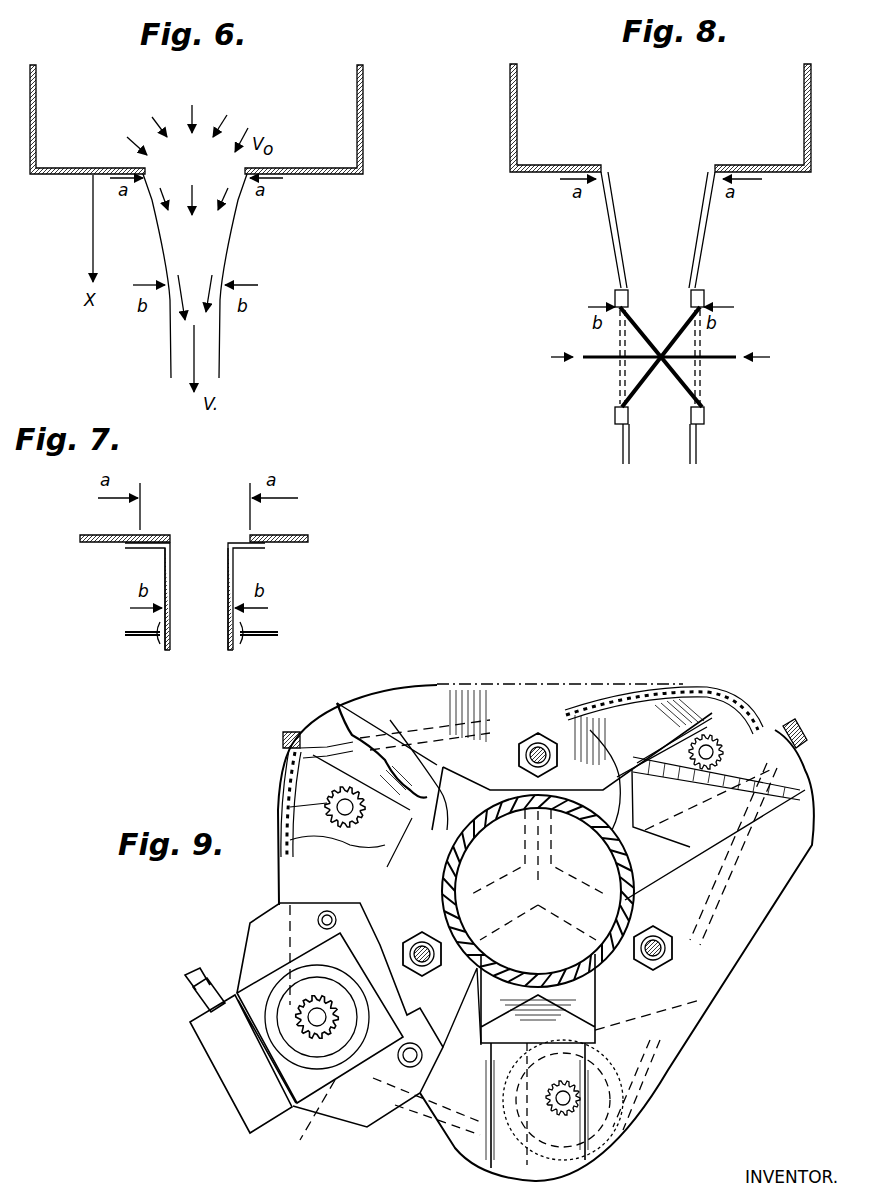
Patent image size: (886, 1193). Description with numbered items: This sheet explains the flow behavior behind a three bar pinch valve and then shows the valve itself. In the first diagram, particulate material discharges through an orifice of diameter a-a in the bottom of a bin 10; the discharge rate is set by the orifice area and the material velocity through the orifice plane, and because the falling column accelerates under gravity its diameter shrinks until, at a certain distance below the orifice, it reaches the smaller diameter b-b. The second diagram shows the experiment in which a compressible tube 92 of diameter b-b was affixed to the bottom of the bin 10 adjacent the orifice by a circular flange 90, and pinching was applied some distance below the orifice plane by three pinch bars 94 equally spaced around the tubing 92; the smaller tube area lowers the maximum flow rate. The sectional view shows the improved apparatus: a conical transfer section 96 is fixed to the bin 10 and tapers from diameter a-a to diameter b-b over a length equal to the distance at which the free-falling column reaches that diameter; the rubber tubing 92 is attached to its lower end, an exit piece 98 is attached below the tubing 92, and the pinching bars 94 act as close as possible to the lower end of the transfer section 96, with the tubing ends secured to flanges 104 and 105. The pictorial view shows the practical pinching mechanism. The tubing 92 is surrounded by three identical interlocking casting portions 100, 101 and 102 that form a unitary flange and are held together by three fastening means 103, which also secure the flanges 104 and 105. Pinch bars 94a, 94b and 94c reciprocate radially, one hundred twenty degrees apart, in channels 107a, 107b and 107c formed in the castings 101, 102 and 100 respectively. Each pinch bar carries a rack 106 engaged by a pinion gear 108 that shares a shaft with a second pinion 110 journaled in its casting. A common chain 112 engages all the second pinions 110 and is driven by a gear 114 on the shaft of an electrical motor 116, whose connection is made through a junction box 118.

In FIG. 6, the bin 10 is at (365, 97).
In FIG. 7, the bin 10 is at (290, 535).
In FIG. 8, the bin 10 is at (811, 108).
In FIG. 7, the circular flange 90 is at (155, 550).
In FIG. 7, the compressible tubing 92 is at (238, 568).
In FIG. 8, the compressible tubing 92 is at (635, 379).
In FIG. 9, the compressible tubing 92 is at (660, 893).
In FIG. 7, the pinch bars 94 is at (129, 633).
In FIG. 8, the pinch bars 94 is at (592, 348).
In FIG. 8, the conical transfer section 96 is at (704, 232).
In FIG. 8, the exit piece 98 is at (697, 441).
In FIG. 8, the flange 104 is at (613, 299).
In FIG. 8, the flange 105 is at (613, 421).
In FIG. 9, the casting portion 100 is at (518, 695).
In FIG. 9, the casting portion 101 is at (790, 843).
In FIG. 9, the casting portion 102 is at (450, 1130).
In FIG. 9, the fastening means 103 is at (538, 743).
In FIG. 9, the rack 106 is at (807, 727).
In FIG. 9, the channel 107a is at (612, 700).
In FIG. 9, the channel 107b is at (600, 1005).
In FIG. 9, the channel 107c is at (455, 705).
In FIG. 9, the pinion gear 108 is at (352, 804).
In FIG. 9, the second pinion 110 is at (680, 690).
In FIG. 9, the common chain 112 is at (282, 775).
In FIG. 9, the gear 114 is at (320, 1028).
In FIG. 9, the electrical motor 116 is at (260, 935).
In FIG. 9, the junction box 118 is at (210, 1075).
In FIG. 9, the pinch bar 94a is at (718, 862).
In FIG. 9, the pinch bar 94b is at (481, 1045).
In FIG. 9, the pinch bar 94c is at (400, 700).